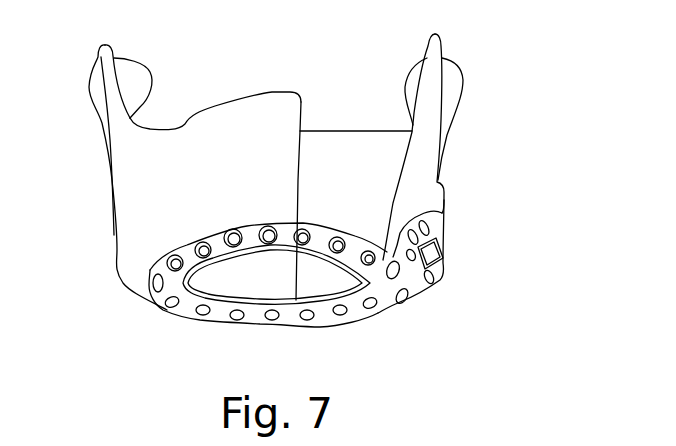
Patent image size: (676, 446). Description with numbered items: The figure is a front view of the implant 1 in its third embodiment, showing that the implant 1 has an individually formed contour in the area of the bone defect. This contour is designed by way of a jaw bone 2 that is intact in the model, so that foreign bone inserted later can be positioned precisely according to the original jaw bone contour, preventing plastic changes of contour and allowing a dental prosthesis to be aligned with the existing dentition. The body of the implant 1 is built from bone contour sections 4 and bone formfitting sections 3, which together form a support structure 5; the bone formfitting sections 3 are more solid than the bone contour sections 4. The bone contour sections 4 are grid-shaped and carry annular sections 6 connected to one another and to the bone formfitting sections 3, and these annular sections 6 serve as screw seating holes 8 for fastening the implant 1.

The implant 1 is at (459, 207).
The jaw bone 2 is at (269, 118).
The bone formfitting sections 3 is at (437, 270).
The bone contour sections 4 is at (193, 260).
The support structure 5 is at (323, 310).
The annular sections 6 is at (442, 213).
The screw seating holes 8 is at (338, 236).